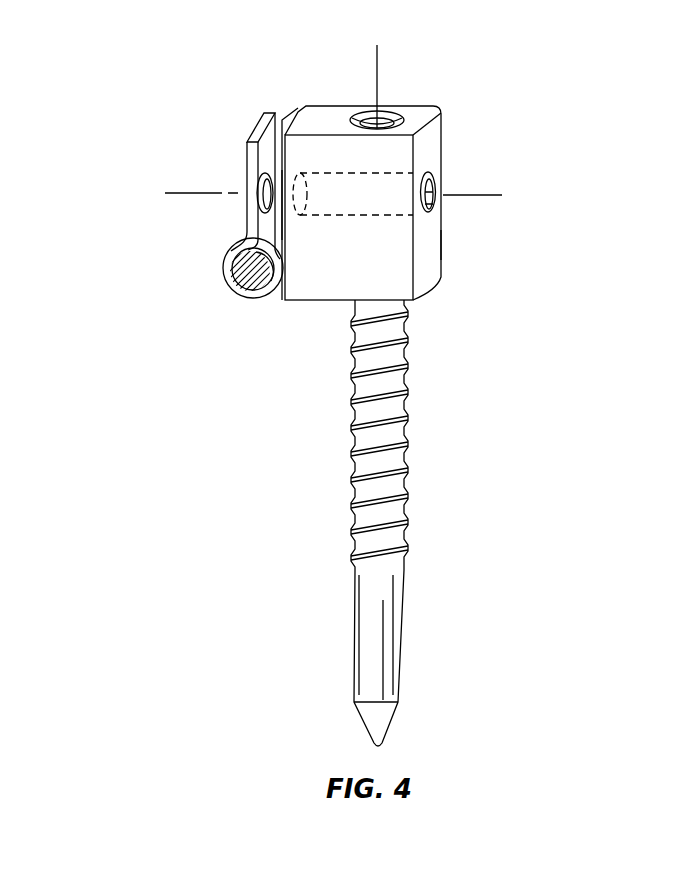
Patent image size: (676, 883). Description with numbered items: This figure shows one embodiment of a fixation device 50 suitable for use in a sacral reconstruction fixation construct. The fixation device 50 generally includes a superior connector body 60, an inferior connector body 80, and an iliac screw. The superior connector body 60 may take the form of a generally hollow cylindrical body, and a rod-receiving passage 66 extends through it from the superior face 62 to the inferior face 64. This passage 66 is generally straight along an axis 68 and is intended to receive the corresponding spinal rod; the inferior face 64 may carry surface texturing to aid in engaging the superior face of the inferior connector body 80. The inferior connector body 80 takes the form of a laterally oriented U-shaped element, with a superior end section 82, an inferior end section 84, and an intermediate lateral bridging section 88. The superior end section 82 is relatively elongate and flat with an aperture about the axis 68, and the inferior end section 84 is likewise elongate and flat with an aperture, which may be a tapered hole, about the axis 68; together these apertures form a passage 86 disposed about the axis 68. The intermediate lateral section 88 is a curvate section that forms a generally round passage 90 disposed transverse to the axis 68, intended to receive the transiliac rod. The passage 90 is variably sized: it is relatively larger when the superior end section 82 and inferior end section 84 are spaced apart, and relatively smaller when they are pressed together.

The fixation device 50 is at (146, 99).
The superior connector body 60 is at (429, 84).
The superior face 62 is at (428, 153).
The inferior face 64 is at (278, 167).
The rod-receiving passage 66 is at (437, 184).
The axis 68 is at (472, 196).
The inferior connector body 80 is at (258, 64).
The superior end section 82 is at (280, 170).
The inferior end section 84 is at (244, 168).
The passage 86 is at (231, 182).
The intermediate lateral bridging section 88 is at (253, 300).
The passage 90 is at (255, 273).